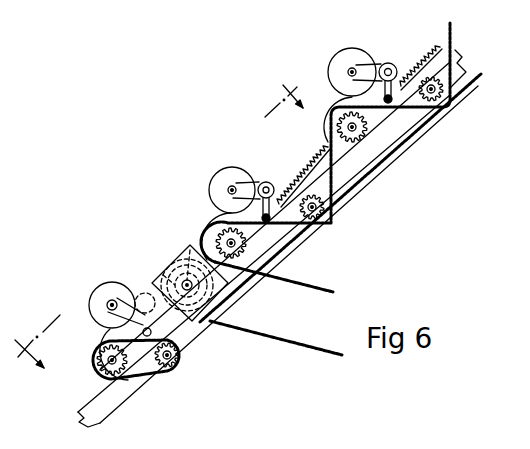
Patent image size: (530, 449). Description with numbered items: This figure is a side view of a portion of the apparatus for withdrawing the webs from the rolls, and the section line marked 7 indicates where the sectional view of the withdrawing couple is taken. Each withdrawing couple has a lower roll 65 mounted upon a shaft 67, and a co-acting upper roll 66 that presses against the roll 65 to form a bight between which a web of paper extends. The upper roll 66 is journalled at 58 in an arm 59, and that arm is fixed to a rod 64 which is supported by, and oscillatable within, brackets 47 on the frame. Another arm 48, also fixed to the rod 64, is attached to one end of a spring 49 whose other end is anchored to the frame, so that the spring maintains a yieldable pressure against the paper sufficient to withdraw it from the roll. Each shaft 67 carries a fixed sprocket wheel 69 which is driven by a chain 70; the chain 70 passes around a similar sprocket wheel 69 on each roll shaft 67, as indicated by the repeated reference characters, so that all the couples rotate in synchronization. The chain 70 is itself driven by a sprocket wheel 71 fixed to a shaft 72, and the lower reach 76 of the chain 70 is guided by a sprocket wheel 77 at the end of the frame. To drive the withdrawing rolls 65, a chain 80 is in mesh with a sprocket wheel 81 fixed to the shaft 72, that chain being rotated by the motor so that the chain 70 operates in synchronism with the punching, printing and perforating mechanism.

The section line 7- 7 is at (165, 232).
The brackets 47 is at (388, 62).
The arm 48 is at (402, 78).
The spring 49 is at (309, 170).
The journal 58 is at (107, 303).
The arm 59 is at (140, 293).
The rod 64 is at (267, 182).
The roll 65 is at (85, 368).
The co-acting roll 66 is at (347, 50).
The shaft 67 is at (108, 358).
The sprocket wheel 69 is at (358, 138).
The chain 70 is at (143, 375).
The sprocket wheel 71 is at (182, 270).
The shaft 72 is at (195, 242).
The lower reach 76 is at (320, 222).
The sprocket wheel 77 is at (172, 360).
The chain 80 is at (325, 293).
The sprocket wheel 81 is at (163, 275).